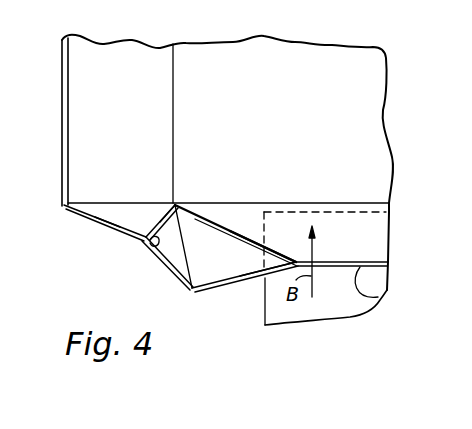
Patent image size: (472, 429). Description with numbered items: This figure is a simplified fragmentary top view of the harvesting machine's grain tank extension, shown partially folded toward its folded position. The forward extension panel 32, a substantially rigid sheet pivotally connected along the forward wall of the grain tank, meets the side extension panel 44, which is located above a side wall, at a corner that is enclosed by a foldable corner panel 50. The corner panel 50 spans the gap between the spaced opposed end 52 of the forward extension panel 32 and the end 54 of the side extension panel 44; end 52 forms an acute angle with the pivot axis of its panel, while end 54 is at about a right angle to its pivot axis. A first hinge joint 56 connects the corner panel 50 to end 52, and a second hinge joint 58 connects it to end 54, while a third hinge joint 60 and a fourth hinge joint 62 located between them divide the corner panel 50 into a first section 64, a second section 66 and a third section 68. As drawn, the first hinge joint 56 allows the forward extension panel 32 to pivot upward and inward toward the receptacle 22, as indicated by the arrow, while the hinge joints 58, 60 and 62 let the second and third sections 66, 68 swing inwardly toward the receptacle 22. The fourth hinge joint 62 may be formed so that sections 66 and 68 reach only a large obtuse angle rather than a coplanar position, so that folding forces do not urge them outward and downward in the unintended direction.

The receptacle 22 is at (305, 93).
The forward extension panel 32 is at (386, 290).
The side extension panel 44 is at (62, 87).
The foldable corner panel 50 is at (213, 292).
The end of forward or rear extension panel 52 is at (256, 271).
The end of side extension panel 54 is at (93, 214).
The first hinge joint 56 is at (228, 232).
The second hinge joint 58 is at (107, 208).
The third hinge joint 60 is at (189, 262).
The fourth hinge joint 62 is at (153, 246).
The first section 64 is at (188, 226).
The second section 66 is at (181, 205).
The third section 68 is at (133, 212).